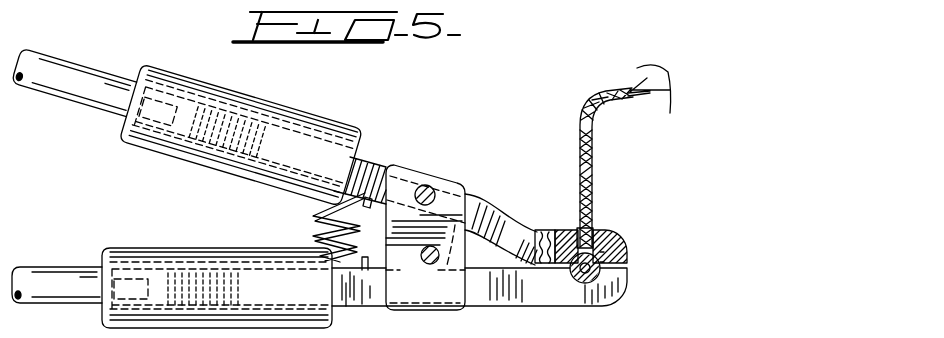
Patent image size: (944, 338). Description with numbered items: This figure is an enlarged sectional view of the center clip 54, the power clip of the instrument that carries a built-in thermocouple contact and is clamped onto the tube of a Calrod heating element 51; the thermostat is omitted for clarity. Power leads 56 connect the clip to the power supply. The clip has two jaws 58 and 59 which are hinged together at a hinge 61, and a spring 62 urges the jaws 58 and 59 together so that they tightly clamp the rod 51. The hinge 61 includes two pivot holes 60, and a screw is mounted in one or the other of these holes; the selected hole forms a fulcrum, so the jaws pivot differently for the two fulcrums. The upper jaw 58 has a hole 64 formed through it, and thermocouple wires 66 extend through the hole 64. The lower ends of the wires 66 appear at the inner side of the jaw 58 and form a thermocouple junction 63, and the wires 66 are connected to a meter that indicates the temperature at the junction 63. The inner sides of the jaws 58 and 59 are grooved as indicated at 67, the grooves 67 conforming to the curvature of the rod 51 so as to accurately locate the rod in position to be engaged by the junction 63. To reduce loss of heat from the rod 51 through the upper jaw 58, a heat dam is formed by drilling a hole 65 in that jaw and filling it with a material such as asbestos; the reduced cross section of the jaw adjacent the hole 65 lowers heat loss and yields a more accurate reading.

The Calrod heating element 51 is at (575, 282).
The center clip 54 is at (481, 180).
The power leads 56 is at (55, 77).
The jaw 58 is at (622, 240).
The jaw 59 is at (628, 288).
The pivot holes 60 is at (430, 264).
The hinge 61 is at (407, 162).
The spring 62 is at (317, 219).
The thermocouple junction 63 is at (552, 236).
The hole 64 is at (590, 232).
The hole 65 is at (545, 230).
The thermocouple wires 66 is at (641, 98).
The grooves 67 is at (603, 262).